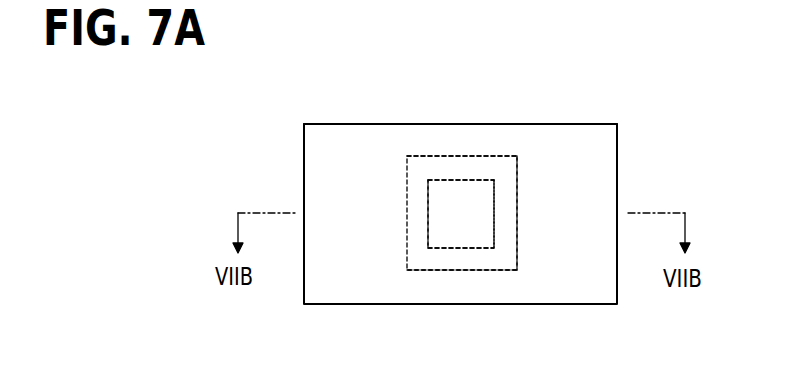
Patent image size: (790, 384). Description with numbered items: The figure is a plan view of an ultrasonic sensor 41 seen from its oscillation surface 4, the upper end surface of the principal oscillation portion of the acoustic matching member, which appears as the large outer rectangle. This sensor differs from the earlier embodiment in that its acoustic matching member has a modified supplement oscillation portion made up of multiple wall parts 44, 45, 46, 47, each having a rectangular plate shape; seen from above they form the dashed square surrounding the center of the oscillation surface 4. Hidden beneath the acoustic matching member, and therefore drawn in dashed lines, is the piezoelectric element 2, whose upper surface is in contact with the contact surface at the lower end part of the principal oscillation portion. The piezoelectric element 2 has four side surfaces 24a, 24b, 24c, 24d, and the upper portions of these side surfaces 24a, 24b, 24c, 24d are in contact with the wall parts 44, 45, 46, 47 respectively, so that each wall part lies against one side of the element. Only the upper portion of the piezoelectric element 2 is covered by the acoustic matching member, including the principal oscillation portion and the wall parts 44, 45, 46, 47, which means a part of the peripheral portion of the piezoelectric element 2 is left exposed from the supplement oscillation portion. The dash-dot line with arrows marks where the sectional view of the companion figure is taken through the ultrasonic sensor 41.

The piezoelectric element 2 is at (444, 232).
The oscillation surface 4 is at (615, 135).
The ultrasonic sensor 41 is at (610, 95).
The wall part 44 is at (413, 187).
The wall part 45 is at (503, 200).
The wall part 46 is at (468, 258).
The wall part 47 is at (473, 167).
The side surface 24a is at (427, 213).
The side surface 24b is at (495, 225).
The side surface 24c is at (483, 248).
The side surface 24d is at (448, 178).